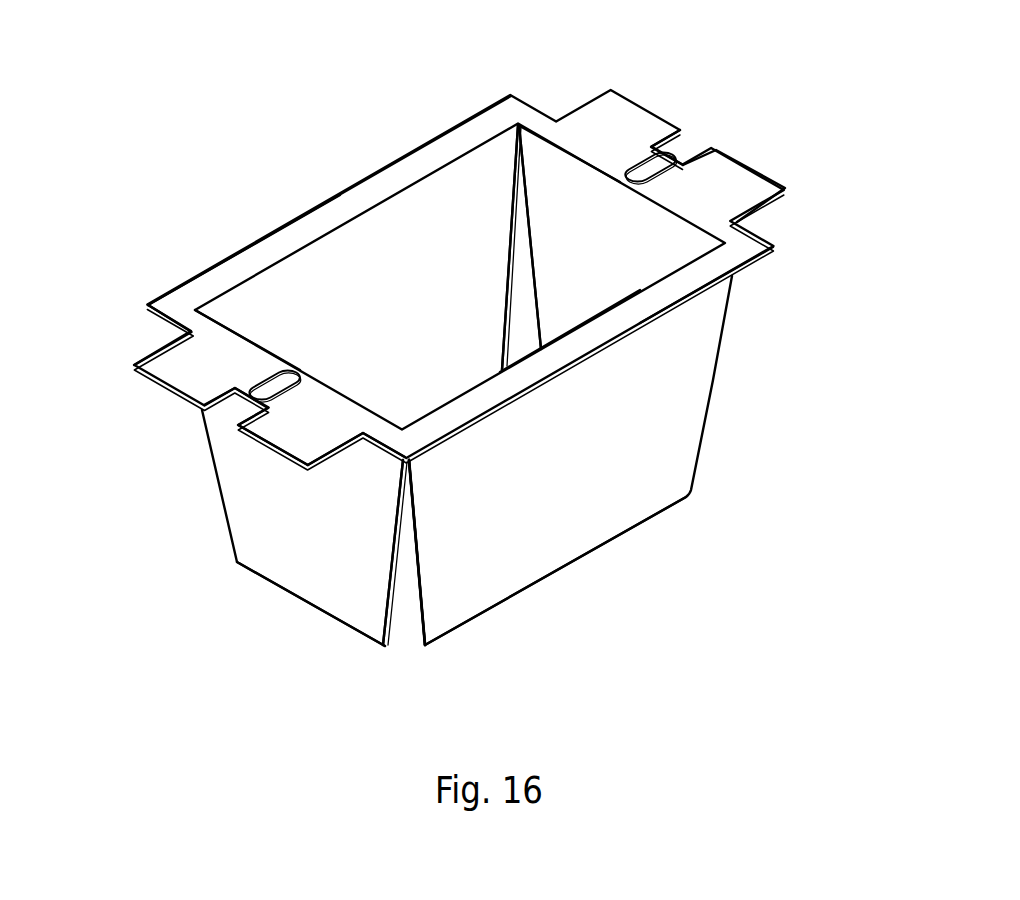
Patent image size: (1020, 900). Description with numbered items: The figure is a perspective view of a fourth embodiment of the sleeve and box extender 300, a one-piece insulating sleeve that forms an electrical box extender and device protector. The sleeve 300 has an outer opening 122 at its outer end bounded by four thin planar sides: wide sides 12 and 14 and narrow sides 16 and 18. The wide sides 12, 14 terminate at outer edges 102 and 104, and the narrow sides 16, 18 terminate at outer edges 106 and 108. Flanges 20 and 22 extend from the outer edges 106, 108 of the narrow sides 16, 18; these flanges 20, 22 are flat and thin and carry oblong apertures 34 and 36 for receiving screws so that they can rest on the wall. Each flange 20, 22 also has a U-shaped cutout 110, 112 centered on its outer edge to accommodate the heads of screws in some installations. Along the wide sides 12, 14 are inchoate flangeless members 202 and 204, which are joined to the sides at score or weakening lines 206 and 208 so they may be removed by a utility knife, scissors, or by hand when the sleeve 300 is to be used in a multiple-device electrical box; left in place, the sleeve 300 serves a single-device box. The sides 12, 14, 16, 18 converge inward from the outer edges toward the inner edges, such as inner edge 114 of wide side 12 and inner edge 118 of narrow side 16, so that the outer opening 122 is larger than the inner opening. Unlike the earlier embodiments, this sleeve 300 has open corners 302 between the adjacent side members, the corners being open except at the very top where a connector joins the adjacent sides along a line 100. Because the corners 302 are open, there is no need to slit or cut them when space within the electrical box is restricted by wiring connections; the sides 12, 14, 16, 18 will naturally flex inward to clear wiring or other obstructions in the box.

The sleeve and box extender 300 is at (290, 83).
The wide side 14 is at (380, 289).
The outer opening 122 is at (419, 250).
The outer edge 104 is at (337, 228).
The inchoate flangeless member 204 is at (253, 264).
The score or weakening line 208 is at (173, 323).
The outer edge 106 is at (227, 333).
The outer edge 108 is at (568, 156).
The outer edge 102 is at (562, 335).
The inchoate flangeless member 202 is at (662, 296).
The U-shaped cutout 112 is at (680, 148).
The flange 22 is at (733, 206).
The flange 20 is at (326, 448).
The U-shaped cutout 110 is at (232, 406).
The score or weakening line 206 is at (378, 445).
The aperture 36 is at (650, 176).
The aperture 34 is at (258, 370).
The narrow side 16 is at (296, 516).
The inner edge 118 is at (310, 603).
The wide side 12 is at (580, 449).
The inner edge 114 is at (560, 572).
The narrow side 18 is at (631, 236).
The line 100 is at (503, 247).
The open corner 302 is at (512, 323).